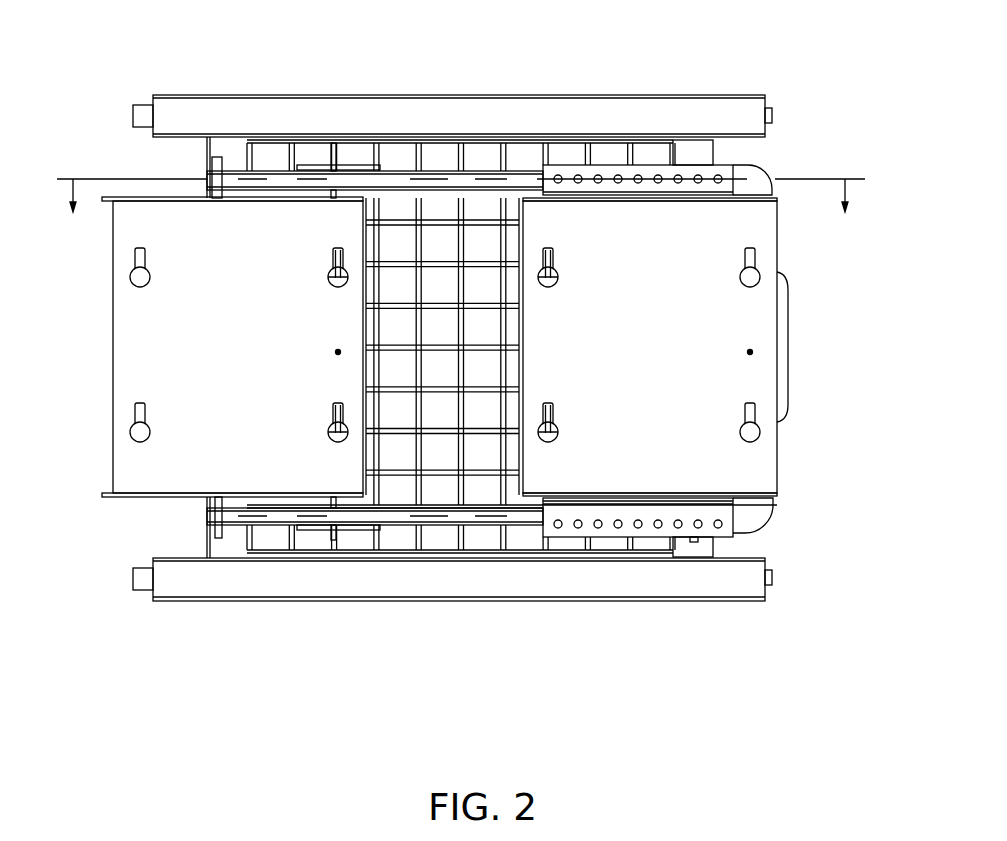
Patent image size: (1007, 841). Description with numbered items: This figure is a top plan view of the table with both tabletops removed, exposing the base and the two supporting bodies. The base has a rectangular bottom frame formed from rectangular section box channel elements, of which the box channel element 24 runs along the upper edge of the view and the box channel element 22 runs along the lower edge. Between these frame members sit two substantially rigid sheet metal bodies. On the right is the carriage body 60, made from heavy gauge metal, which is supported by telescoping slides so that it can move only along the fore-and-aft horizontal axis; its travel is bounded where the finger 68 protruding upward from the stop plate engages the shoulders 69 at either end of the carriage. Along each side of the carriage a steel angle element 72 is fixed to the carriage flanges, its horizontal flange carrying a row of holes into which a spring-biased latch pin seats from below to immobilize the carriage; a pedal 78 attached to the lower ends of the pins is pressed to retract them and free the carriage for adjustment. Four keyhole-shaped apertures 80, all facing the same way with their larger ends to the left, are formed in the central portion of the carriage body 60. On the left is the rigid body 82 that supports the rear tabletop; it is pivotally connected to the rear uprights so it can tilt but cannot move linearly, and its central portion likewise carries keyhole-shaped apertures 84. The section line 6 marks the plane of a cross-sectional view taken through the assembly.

The section line 6- 6 is at (460, 183).
The box channel element 22 is at (333, 587).
The box channel element 24 is at (328, 115).
The carriage body 60 is at (654, 374).
The finger 68 is at (707, 167).
The shoulders 69 is at (567, 167).
The steel angle element 72 is at (728, 522).
The pedal 78 is at (788, 345).
The keyhole-shaped apertures 80 is at (752, 282).
The rigid body 82 is at (248, 357).
The keyhole-shaped apertures 84 is at (141, 275).